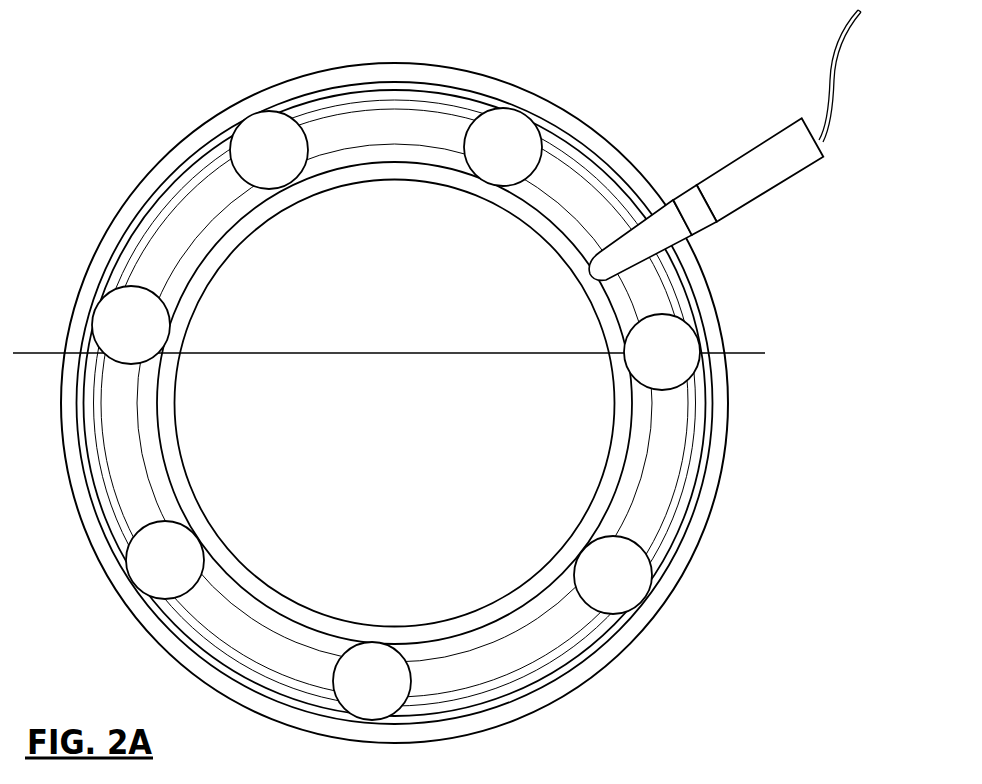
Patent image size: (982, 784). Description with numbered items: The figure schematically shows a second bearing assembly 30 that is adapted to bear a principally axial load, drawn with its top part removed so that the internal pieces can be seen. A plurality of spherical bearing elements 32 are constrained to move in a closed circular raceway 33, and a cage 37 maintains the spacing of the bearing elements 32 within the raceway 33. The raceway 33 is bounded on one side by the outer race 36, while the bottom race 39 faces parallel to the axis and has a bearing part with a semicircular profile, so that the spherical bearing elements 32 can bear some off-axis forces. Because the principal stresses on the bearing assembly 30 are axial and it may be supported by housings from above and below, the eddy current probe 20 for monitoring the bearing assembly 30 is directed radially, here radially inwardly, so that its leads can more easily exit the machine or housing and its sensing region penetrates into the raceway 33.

The probe 20 is at (765, 158).
The bearing assembly 30 is at (394, 383).
The bearing elements 32 is at (651, 363).
The raceway 33 is at (370, 136).
The outer race 36 is at (205, 198).
The cage 37 is at (303, 106).
The bottom race 39 is at (573, 125).